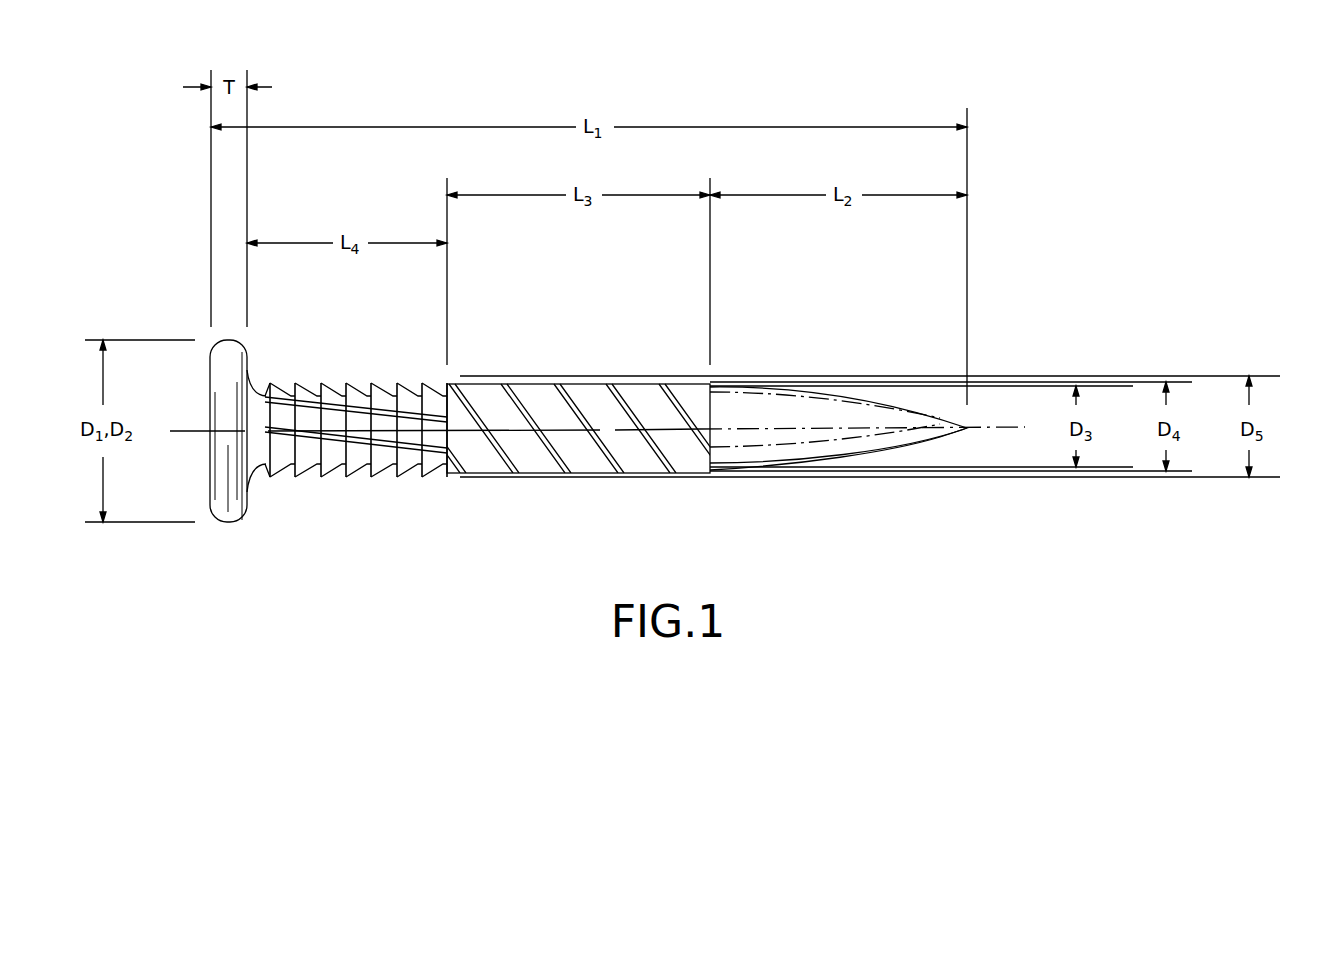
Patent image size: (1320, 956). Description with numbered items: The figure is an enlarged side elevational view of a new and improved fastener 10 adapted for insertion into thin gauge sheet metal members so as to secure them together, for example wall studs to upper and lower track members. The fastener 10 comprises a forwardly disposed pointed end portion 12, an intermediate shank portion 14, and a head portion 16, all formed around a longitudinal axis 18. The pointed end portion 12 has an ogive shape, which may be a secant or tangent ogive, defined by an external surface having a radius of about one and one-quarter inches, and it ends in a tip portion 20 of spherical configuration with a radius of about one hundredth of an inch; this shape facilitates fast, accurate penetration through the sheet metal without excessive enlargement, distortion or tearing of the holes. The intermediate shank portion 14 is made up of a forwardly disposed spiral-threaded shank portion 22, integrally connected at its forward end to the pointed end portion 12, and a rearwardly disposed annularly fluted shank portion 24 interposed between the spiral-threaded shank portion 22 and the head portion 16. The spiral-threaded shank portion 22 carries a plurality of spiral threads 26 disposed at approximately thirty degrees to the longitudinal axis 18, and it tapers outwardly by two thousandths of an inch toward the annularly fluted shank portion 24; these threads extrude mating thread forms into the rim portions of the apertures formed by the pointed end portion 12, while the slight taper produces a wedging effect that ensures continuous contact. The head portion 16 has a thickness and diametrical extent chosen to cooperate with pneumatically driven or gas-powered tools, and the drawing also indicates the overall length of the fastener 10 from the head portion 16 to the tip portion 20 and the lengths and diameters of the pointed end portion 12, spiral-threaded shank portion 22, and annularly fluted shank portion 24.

The fastener 10 is at (1095, 188).
The forwardly disposed pointed end portion 12 is at (818, 395).
The intermediate shank portion 14 is at (510, 380).
The head portion 16 is at (222, 368).
The longitudinal axis 18 is at (740, 425).
The tip portion 20 is at (970, 432).
The spiral-threaded shank portion 22 is at (548, 442).
The annularly fluted shank portion 24 is at (350, 385).
The spiral threads 26 is at (632, 398).